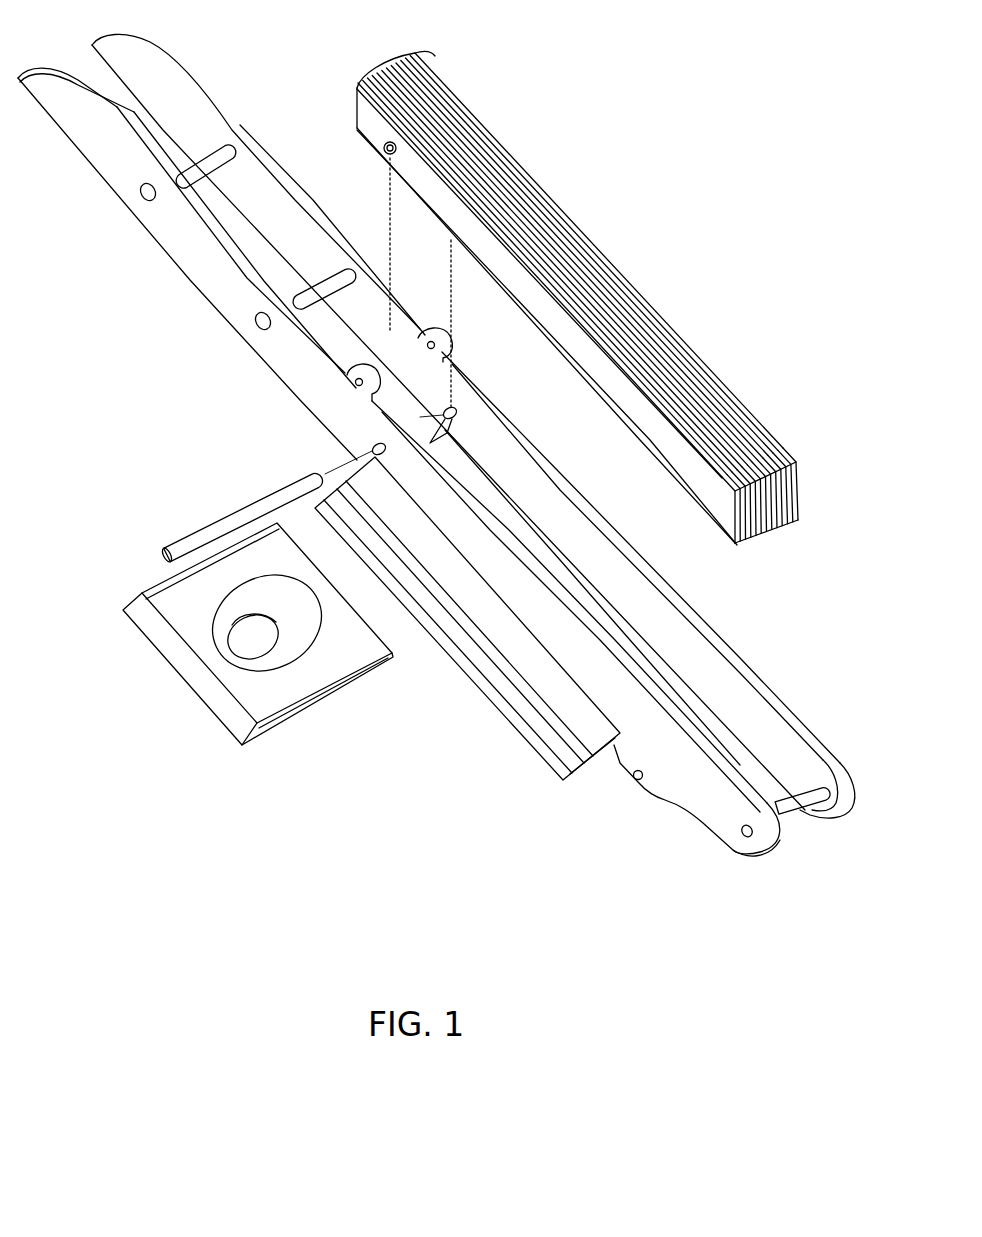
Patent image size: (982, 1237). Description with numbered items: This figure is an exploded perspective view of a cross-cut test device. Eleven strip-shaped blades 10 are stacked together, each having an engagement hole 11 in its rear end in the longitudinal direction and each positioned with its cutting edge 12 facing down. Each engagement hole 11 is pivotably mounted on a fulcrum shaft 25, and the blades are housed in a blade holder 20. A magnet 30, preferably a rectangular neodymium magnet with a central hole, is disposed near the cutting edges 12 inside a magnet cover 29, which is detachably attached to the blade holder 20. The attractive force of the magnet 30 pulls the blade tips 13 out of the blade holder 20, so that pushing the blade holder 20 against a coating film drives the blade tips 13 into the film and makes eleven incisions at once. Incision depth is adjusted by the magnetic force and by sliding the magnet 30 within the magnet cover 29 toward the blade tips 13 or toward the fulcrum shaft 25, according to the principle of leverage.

The strip-shaped blade 10 is at (600, 247).
The engagement hole 11 is at (355, 112).
The cutting edge 12 is at (572, 378).
The blade tip 13 is at (790, 530).
The blade holder 20 is at (633, 757).
The fulcrum shaft 25 is at (233, 520).
The magnet cover 29 is at (503, 713).
The magnet 30 is at (313, 703).